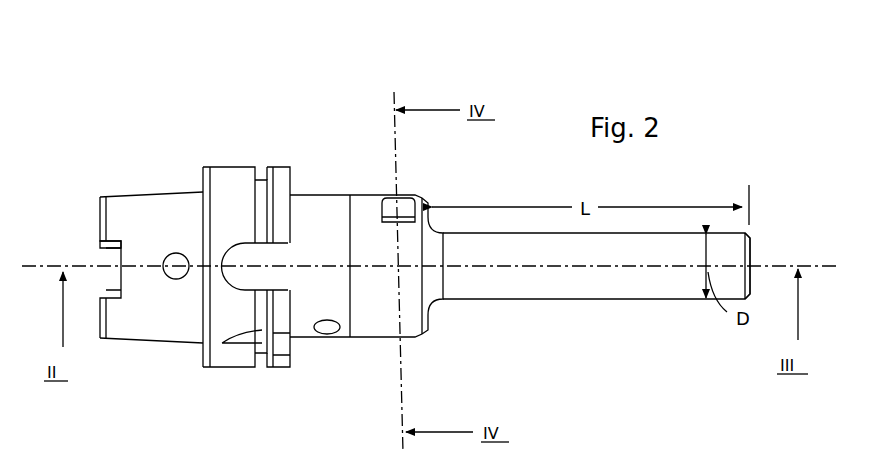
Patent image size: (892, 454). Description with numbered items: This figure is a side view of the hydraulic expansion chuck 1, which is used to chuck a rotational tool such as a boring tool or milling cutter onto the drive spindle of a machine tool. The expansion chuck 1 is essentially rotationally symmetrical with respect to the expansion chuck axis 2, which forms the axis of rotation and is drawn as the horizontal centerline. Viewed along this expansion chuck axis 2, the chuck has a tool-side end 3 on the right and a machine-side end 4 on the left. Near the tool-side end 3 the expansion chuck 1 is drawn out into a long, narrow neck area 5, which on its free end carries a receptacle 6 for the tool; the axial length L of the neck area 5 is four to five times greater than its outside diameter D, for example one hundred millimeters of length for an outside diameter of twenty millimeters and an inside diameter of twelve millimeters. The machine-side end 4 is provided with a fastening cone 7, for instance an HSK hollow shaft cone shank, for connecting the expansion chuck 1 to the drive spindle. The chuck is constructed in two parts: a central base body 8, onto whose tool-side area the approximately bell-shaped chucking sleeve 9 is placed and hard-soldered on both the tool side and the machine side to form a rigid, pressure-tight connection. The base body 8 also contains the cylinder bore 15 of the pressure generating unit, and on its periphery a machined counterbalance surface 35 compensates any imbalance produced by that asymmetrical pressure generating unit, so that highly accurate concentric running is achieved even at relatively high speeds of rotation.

The expansion chuck 1 is at (105, 65).
The expansion chuck axis 2 is at (827, 263).
The tool-side end 3 is at (766, 241).
The machine-side end 4 is at (72, 240).
The neck area 5 is at (603, 288).
The receptacle 6 is at (682, 6).
The fastening cone 7 is at (134, 206).
The base body 8 is at (244, 165).
The chucking sleeve 9 is at (470, 296).
The cylinder bore 15 is at (406, 206).
The counterbalance surface 35 is at (306, 343).